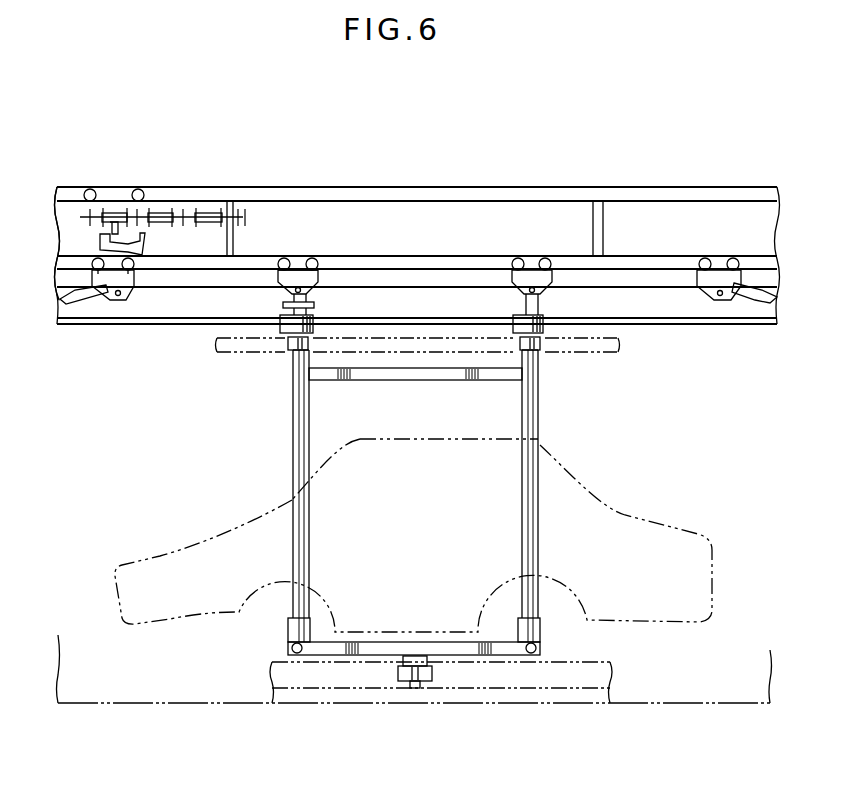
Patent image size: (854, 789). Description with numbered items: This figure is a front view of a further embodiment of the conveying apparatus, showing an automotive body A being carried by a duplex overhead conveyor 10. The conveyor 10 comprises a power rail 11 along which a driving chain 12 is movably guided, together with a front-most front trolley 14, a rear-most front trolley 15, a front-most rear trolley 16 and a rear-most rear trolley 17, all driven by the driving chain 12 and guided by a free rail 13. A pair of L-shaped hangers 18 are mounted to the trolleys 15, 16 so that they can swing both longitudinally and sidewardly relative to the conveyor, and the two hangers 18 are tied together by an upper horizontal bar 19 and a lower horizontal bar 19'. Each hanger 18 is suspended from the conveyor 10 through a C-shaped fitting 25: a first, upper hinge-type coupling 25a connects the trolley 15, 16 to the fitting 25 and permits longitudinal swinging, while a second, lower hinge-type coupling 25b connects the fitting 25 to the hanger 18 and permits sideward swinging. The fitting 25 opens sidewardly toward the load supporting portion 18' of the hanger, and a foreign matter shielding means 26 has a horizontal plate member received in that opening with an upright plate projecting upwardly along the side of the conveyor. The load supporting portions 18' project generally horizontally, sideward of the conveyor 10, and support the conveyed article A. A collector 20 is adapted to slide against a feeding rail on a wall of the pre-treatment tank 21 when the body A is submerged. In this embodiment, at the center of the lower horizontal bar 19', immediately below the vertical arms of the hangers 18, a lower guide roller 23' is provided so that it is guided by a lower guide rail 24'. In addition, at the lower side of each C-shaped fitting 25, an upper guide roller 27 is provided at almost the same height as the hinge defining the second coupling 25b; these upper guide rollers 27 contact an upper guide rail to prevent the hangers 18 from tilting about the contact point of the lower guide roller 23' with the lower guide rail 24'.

The duplex overhead conveyor 10 is at (417, 170).
The power rail 11 is at (262, 187).
The driving chain 12 is at (208, 223).
The free rail 13 is at (652, 258).
The front-most front trolley 14 is at (133, 294).
The rear-most front trolley 15 is at (320, 278).
The front-most rear trolley 16 is at (512, 279).
The rear-most rear trolley 17 is at (711, 285).
The L-shaped hanger 18 is at (415, 484).
The load supporting portion 18' is at (415, 643).
The upper horizontal bar 19 is at (418, 383).
The lower horizontal bar 19' is at (414, 700).
The collector 20 is at (316, 305).
The tank 21 is at (170, 680).
The lower guide roller 23' is at (417, 707).
The lower guide rail 24' is at (441, 710).
The C-shaped fitting 25 is at (283, 320).
The first hinge-type coupling 25a is at (288, 280).
The second hinge-type coupling 25b is at (293, 357).
The foreign matter shielding means 26 is at (100, 328).
The upper guide roller 27 is at (289, 346).
The conveyed article A is at (630, 517).